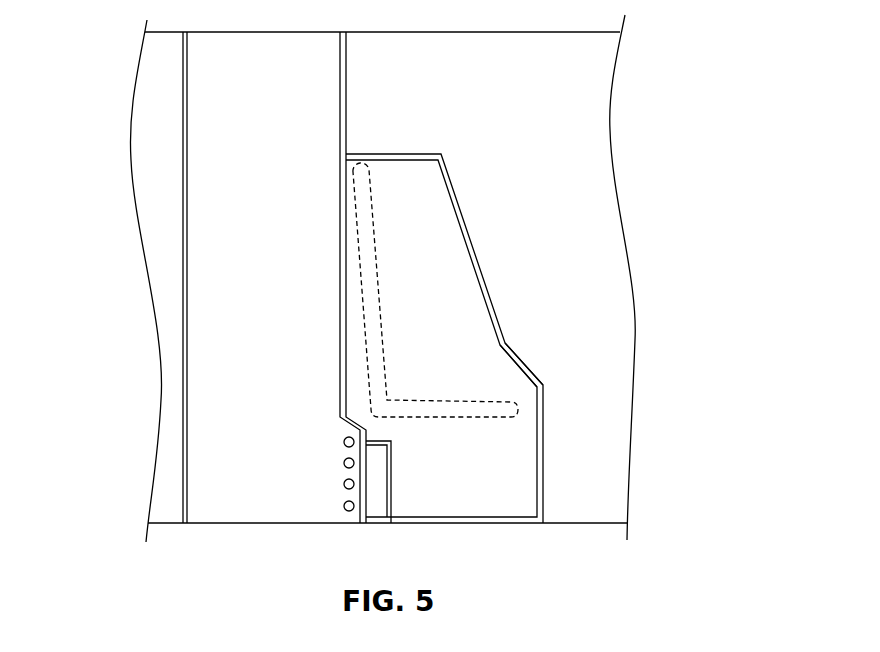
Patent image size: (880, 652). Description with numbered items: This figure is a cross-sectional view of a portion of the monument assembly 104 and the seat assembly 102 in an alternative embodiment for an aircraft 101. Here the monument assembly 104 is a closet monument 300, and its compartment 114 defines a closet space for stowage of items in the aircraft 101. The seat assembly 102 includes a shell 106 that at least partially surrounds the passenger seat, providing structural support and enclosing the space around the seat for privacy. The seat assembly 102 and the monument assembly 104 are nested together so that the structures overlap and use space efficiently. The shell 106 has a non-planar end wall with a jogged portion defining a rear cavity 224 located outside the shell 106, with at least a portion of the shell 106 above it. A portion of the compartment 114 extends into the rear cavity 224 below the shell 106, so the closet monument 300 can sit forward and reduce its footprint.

The aircraft 101 is at (671, 81).
The closet monument 300 is at (182, 176).
The monument assembly 104 is at (182, 306).
The compartment 114 is at (242, 459).
The seat assembly 102 is at (499, 293).
The shell 106 is at (504, 342).
The rear cavity 224 is at (345, 513).